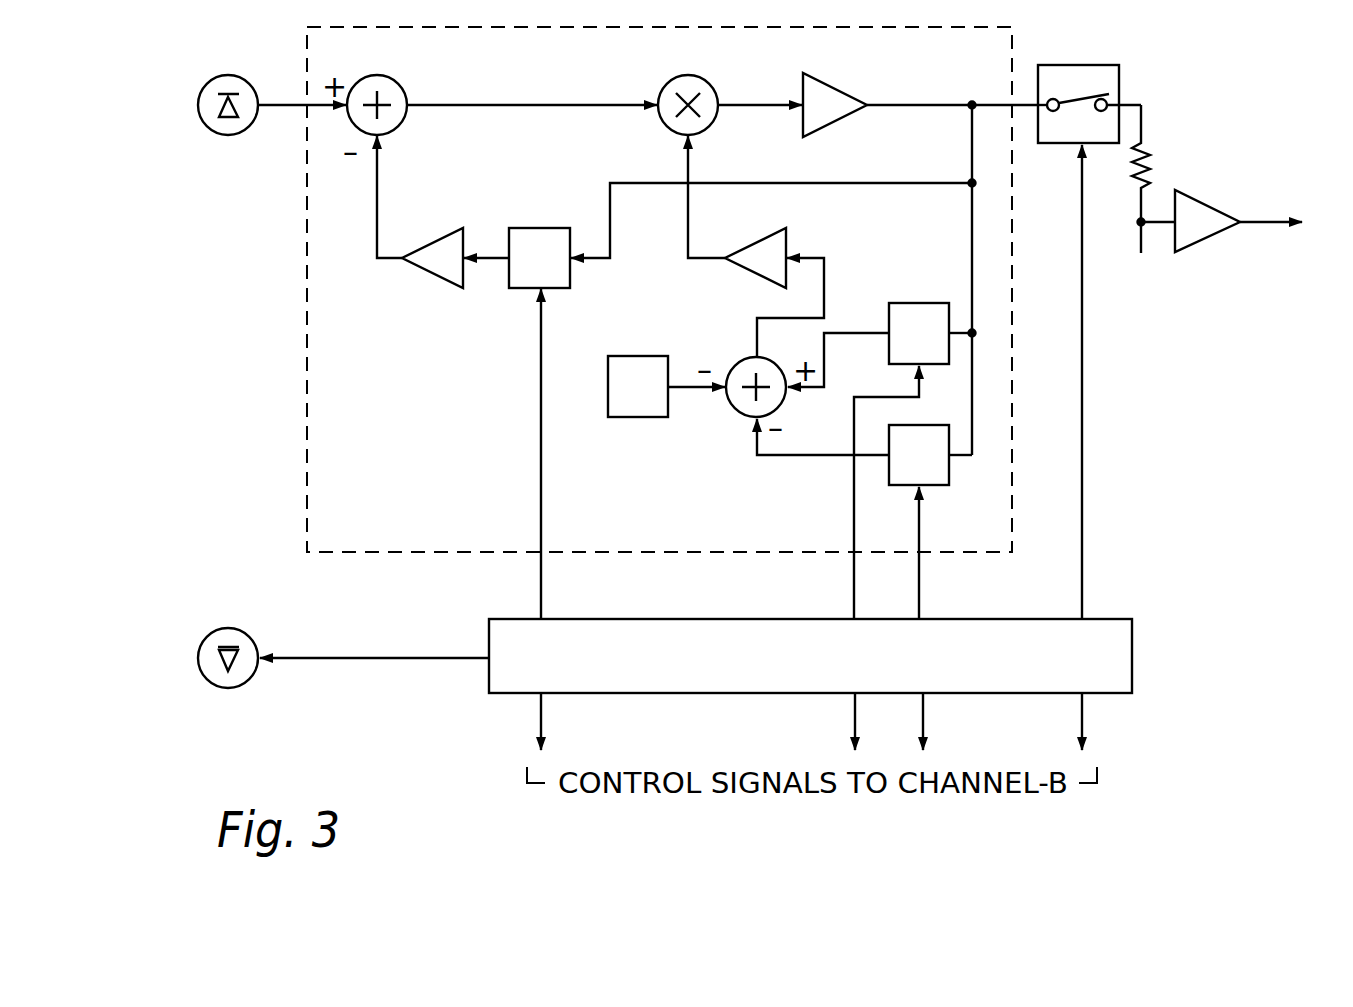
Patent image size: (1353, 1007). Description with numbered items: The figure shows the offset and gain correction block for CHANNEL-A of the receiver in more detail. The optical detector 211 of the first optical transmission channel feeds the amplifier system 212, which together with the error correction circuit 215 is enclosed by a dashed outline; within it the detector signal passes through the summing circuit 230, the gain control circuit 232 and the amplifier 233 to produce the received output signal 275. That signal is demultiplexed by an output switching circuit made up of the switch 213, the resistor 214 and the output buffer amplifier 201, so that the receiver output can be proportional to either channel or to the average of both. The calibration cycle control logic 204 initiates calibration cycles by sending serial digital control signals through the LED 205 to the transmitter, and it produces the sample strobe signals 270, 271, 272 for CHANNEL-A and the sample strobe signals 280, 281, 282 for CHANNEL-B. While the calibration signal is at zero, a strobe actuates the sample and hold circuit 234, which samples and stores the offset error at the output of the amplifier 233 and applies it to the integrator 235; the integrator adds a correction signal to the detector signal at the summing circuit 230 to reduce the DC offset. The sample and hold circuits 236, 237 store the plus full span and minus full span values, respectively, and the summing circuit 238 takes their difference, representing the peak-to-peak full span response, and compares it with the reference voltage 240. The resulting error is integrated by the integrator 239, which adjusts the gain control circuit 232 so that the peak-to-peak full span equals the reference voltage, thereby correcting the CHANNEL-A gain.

The output buffer amplifier 201 is at (1204, 196).
The calibration cycle control logic 204 is at (1138, 648).
The LED 205 is at (262, 650).
The optical detector 211 is at (250, 134).
The amplifier system 212 is at (659, 312).
The switch 213 is at (1124, 80).
The resistor 214 is at (1154, 166).
The error correction circuit 215 is at (502, 560).
The summing circuit 230 is at (403, 80).
The gain control circuit 232 is at (716, 82).
The amplifier 233 is at (838, 82).
The sample and hold circuit 234 is at (558, 290).
The integrator 235 is at (436, 278).
The sample and hold circuit 236 is at (934, 300).
The sample and hold circuit 237 is at (953, 488).
The summing circuit 238 is at (728, 360).
The integrator 239 is at (794, 240).
The reference voltage 240 is at (641, 424).
The sample strobe signal 270 is at (550, 606).
The sample strobe signal 271 is at (846, 604).
The sample strobe signal 272 is at (926, 604).
The received output signal 275 is at (952, 108).
The sample strobe signal 280 is at (552, 706).
The sample strobe signal 281 is at (848, 704).
The sample strobe signal 282 is at (926, 704).